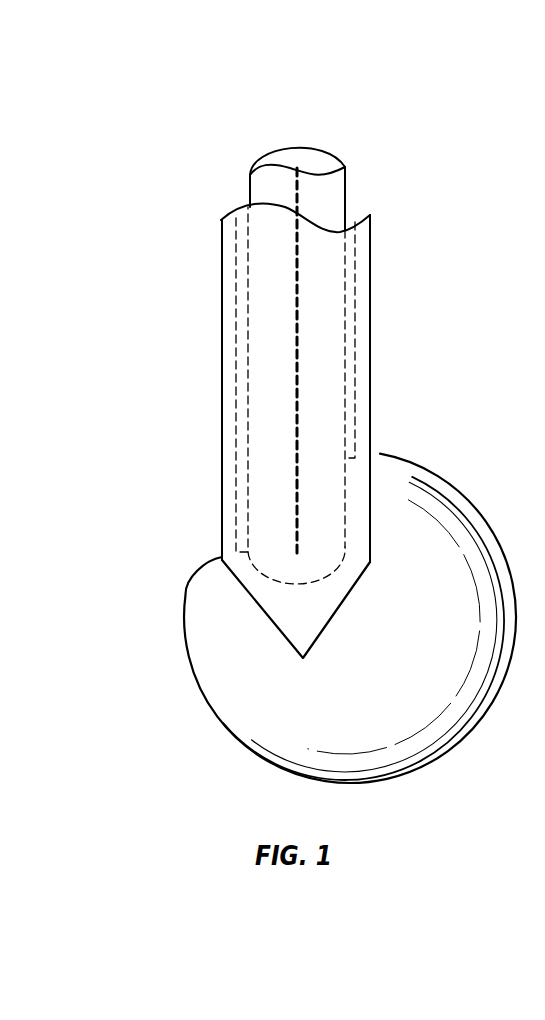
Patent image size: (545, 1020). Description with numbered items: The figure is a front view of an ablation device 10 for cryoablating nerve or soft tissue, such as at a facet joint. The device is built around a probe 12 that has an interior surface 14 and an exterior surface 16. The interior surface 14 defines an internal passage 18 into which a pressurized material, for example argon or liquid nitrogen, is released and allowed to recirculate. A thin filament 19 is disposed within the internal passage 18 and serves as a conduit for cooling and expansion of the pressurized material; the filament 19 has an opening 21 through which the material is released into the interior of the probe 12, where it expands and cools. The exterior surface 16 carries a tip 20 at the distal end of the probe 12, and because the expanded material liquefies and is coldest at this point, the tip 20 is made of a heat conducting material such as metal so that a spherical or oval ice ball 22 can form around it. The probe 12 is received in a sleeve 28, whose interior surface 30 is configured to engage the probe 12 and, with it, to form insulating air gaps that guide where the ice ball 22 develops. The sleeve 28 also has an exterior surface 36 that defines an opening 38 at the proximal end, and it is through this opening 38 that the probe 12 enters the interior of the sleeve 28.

The ablation device 10 is at (124, 131).
The probe 12 is at (306, 136).
The interior surface 14 is at (317, 163).
The exterior surface 16 is at (272, 186).
The internal passage 18 is at (284, 114).
The filament 19 is at (297, 413).
The tip 20 is at (316, 580).
The opening 21 is at (297, 557).
The ice ball 22 is at (148, 640).
The sleeve 28 is at (318, 413).
The interior surface 30 is at (366, 200).
The exterior surface 36 is at (364, 349).
The opening 38 is at (268, 201).